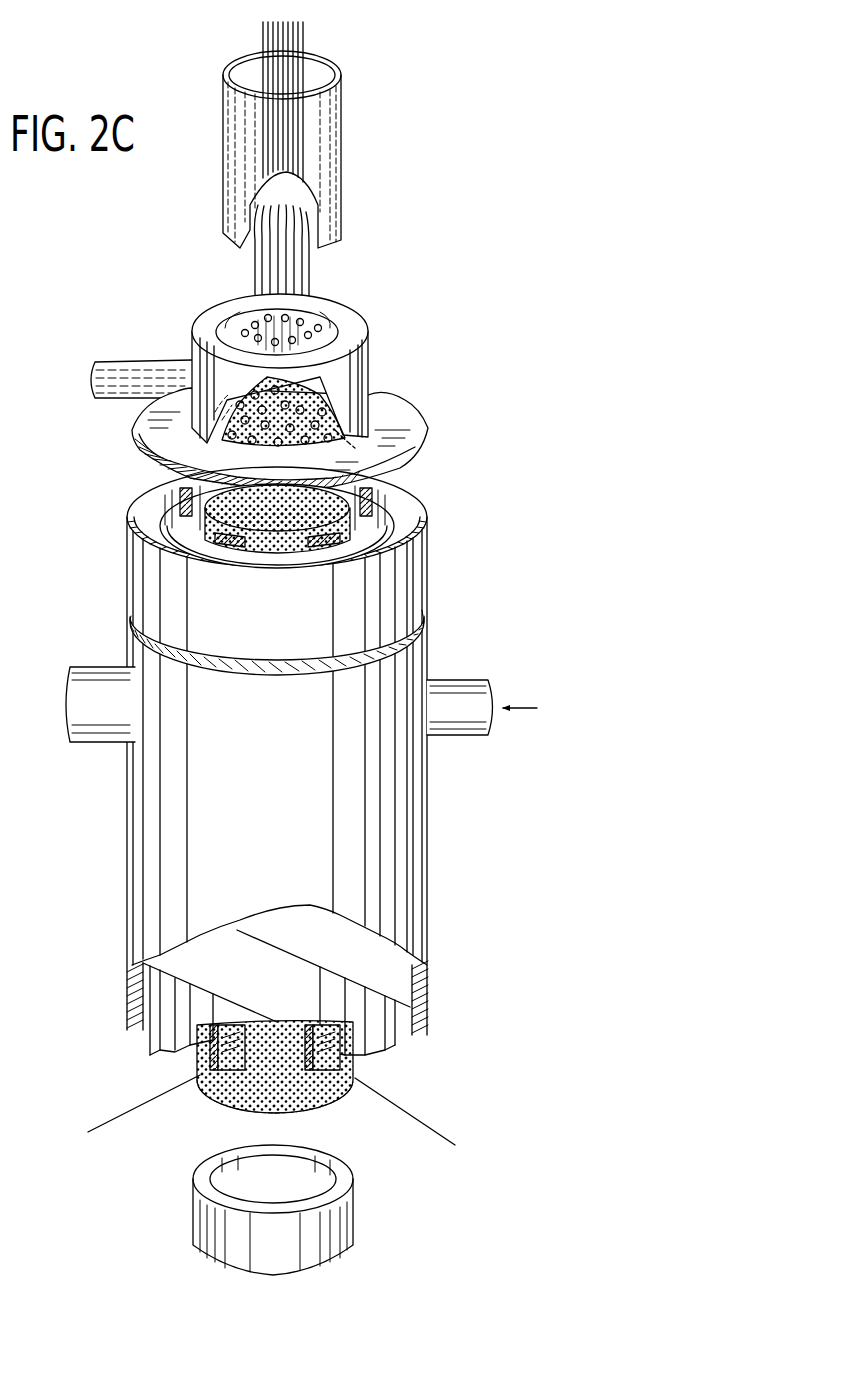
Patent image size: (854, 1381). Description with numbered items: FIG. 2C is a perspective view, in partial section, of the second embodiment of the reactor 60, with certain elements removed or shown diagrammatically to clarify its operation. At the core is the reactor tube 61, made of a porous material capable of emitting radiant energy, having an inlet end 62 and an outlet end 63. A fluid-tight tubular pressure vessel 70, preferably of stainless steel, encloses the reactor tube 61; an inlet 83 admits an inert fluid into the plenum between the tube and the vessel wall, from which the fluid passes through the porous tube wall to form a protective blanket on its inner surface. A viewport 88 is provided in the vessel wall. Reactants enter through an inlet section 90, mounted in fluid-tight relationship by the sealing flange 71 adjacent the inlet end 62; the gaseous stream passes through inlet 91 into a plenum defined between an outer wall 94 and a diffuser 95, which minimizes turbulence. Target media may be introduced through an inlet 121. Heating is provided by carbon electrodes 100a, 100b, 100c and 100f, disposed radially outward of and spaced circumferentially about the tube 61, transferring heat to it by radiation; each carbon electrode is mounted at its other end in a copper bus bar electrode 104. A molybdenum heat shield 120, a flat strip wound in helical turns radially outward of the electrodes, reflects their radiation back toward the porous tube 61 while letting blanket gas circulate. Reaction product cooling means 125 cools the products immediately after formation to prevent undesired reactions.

The inlet 121 is at (341, 160).
The inlet section 90 is at (184, 330).
The inlet 91 is at (115, 362).
The outer wall 94 is at (353, 367).
The sealing flange 71 is at (412, 431).
The diffuser 95 is at (238, 447).
The inlet end 62 is at (318, 498).
The carbon electrode 100f is at (180, 500).
The carbon electrode 100c is at (370, 508).
The carbon electrode 100a is at (227, 540).
The carbon electrode 100b is at (327, 548).
The heat shield 120 is at (167, 512).
The reactor tube 61 is at (215, 528).
The viewport 88 is at (80, 680).
The inlet 83 is at (440, 697).
The reactor 60 is at (108, 816).
The pressure vessel 70 is at (157, 889).
The outlet end 63 is at (322, 1113).
The copper bus bar electrode 104 is at (430, 1130).
The reaction product cooling means 125 is at (352, 1222).